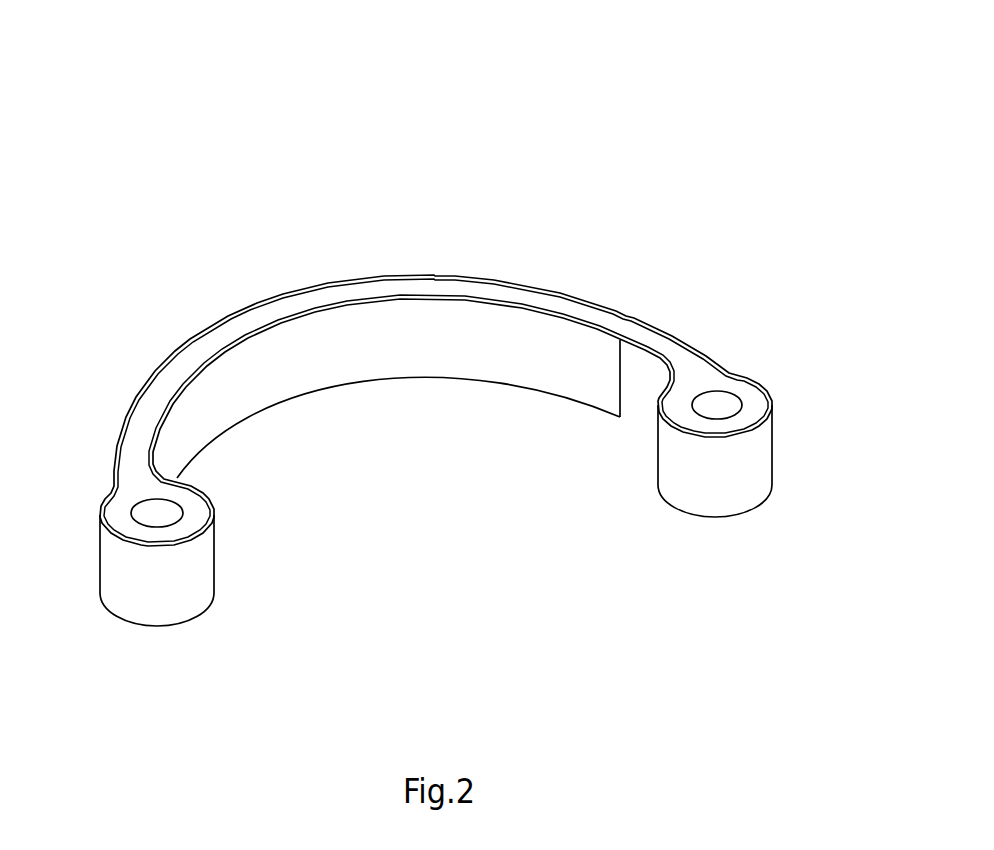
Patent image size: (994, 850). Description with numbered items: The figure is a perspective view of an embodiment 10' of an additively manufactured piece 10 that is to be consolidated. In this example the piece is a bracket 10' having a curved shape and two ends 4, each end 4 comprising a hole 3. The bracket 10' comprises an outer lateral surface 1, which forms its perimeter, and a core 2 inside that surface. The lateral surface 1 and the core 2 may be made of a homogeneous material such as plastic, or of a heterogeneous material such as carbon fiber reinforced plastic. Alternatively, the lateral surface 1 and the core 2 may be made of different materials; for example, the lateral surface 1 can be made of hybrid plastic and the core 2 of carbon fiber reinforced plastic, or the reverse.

The outer lateral surface 1 is at (358, 302).
The core 2 is at (182, 363).
The hole 3 is at (152, 515).
The end 4 is at (153, 587).
The additively manufactured piece 10 is at (436, 363).
The bracket 10' is at (436, 426).